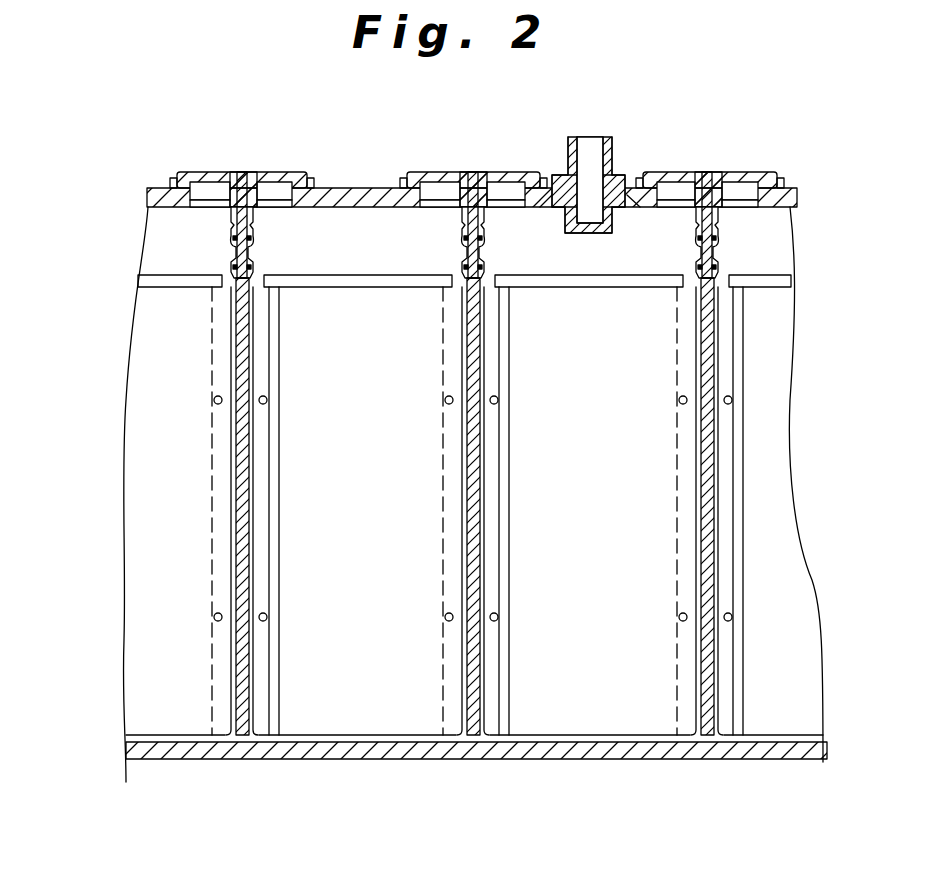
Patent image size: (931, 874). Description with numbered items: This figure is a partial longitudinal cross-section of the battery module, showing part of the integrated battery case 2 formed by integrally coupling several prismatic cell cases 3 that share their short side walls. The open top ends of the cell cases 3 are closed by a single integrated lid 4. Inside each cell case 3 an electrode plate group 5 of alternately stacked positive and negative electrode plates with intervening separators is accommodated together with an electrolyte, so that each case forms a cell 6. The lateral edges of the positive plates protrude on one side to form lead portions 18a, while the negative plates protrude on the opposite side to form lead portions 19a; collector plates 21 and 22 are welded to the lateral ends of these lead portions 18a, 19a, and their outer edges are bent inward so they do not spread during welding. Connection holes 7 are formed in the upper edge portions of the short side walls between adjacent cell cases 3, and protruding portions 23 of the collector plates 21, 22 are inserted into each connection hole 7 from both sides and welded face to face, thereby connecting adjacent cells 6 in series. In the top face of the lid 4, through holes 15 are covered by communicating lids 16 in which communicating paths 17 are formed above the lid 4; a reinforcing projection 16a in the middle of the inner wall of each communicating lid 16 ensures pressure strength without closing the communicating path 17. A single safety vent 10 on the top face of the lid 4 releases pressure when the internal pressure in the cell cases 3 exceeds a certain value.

The integrated battery case 2 is at (120, 748).
The cell case 3 is at (142, 760).
The integrated lid 4 is at (147, 195).
The electrode plate group 5 is at (366, 567).
The cell 6 is at (157, 760).
The connection hole 7 is at (254, 257).
The safety vent 10 is at (595, 180).
The through hole 15 is at (213, 202).
The communicating lid 16 is at (222, 182).
The reinforcing projection 16a is at (243, 192).
The communicating path 17 is at (268, 190).
The lead portion 18a is at (266, 453).
The lead portion 19a is at (226, 447).
The collector plate 21 is at (253, 370).
The collector plate 22 is at (228, 372).
The protruding portion 23 is at (233, 243).